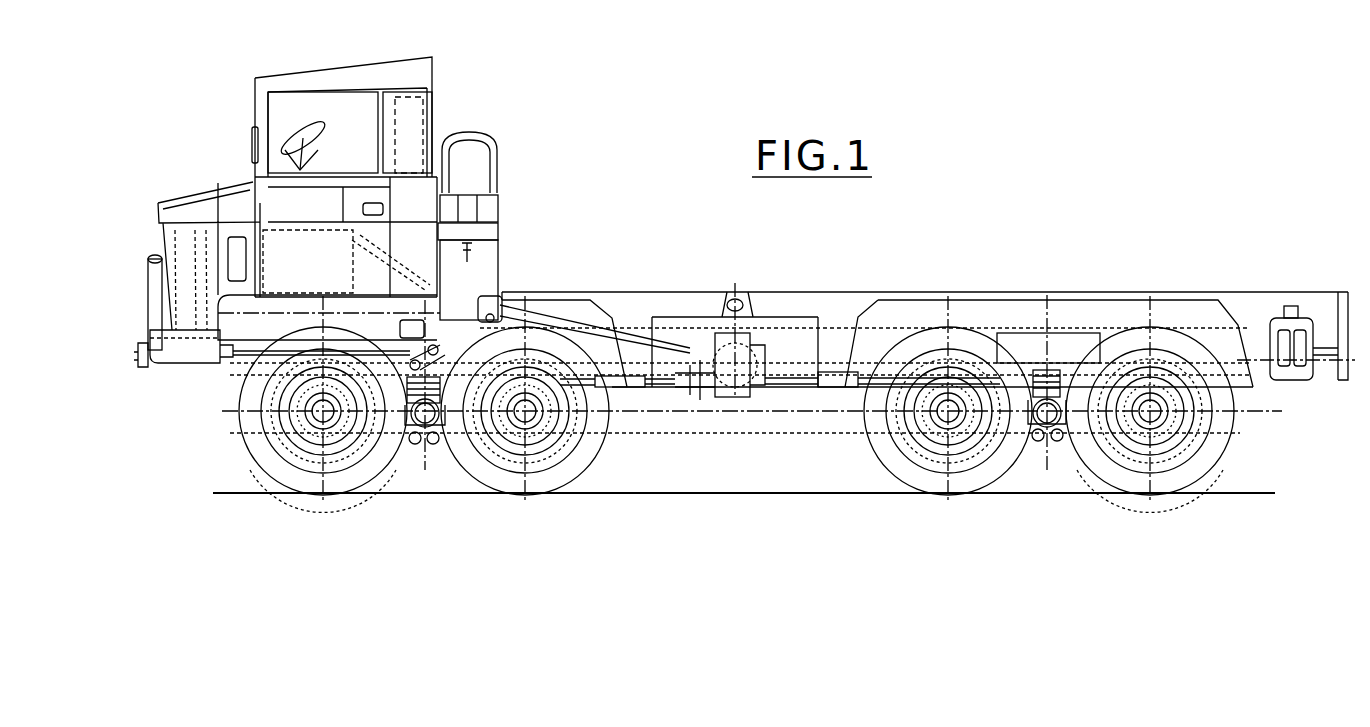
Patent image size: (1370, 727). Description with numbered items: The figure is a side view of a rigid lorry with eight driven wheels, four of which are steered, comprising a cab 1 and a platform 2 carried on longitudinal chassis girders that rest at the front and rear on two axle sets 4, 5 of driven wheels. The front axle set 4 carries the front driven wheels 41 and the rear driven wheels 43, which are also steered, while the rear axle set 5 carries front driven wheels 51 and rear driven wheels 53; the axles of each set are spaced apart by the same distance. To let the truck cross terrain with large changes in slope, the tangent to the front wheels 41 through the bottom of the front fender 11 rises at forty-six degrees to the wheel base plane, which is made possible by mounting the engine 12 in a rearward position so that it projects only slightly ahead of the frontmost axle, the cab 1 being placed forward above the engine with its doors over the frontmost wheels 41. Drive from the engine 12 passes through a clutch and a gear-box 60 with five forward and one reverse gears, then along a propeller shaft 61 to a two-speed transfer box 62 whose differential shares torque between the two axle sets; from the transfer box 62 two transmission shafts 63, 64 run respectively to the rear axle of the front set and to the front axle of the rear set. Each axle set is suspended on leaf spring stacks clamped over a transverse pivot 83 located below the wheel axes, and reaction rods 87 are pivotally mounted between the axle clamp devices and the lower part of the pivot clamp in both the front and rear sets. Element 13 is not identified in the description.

The cab 1 is at (324, 70).
The platform 2 is at (787, 287).
The front axle set 4 is at (407, 459).
The rear axle set 5 is at (1070, 456).
The front fender 11 is at (178, 354).
The engine 12 is at (338, 268).
The cab door 13 is at (363, 190).
The front driven wheels of the front axle set 41 is at (307, 480).
The rear driven wheels of the front axle set 43 is at (535, 477).
The front driven wheels of the rear axle set 51 is at (935, 490).
The rear driven wheels of the rear axle set 53 is at (1172, 477).
The gear-box 60 is at (470, 308).
The propeller shaft 61 is at (590, 317).
The transfer box 62 is at (733, 395).
The transmission shaft 63 is at (616, 388).
The transmission shaft 64 is at (835, 390).
The pivot 83 is at (436, 445).
The reaction rod 87 is at (378, 477).